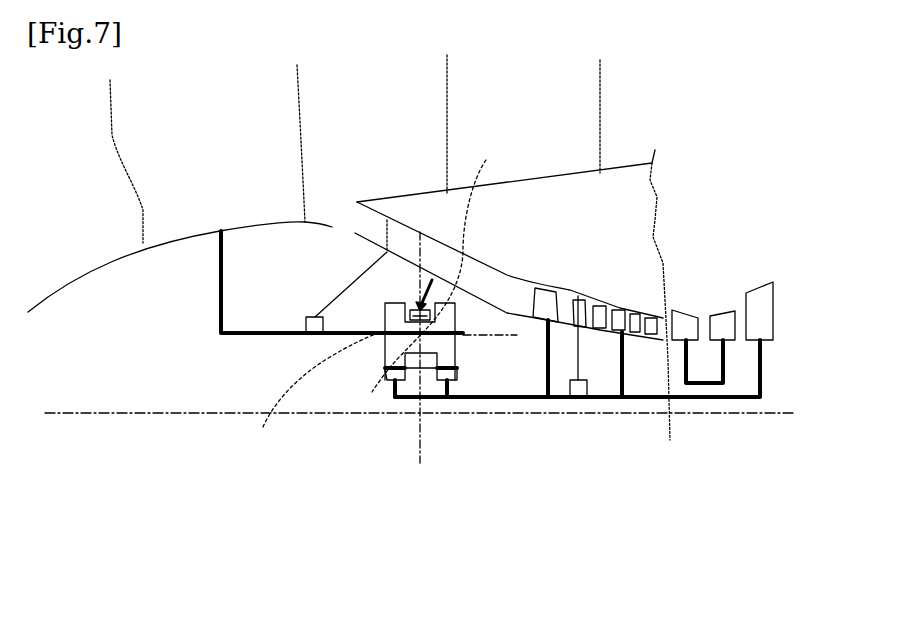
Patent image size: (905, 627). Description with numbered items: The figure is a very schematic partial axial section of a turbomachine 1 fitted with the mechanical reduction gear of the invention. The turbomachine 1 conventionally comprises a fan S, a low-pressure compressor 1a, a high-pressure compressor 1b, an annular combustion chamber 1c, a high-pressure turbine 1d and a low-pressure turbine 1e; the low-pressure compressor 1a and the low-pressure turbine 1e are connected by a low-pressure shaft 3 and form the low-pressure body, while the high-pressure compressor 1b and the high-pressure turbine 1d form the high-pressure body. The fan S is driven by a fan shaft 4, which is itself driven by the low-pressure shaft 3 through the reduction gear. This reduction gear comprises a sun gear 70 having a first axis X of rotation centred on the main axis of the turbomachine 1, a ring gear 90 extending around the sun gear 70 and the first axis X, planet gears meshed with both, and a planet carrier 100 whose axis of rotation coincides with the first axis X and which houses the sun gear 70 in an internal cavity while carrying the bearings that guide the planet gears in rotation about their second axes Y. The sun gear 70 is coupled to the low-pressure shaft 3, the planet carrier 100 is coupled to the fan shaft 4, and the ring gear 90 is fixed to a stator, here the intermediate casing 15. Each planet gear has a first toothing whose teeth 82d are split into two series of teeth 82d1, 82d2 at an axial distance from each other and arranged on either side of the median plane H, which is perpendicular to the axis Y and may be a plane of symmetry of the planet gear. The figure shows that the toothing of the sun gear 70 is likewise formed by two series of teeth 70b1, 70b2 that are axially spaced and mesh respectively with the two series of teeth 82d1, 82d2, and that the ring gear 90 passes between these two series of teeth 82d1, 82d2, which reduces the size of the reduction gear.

The turbomachine 1 is at (664, 230).
The low-pressure compressor 1a is at (600, 303).
The high-pressure compressor 1b is at (680, 320).
The annular combustion chamber 1c is at (703, 313).
The high-pressure turbine 1d is at (727, 316).
The low-pressure turbine 1e is at (760, 290).
The low-pressure shaft 3 is at (525, 399).
The fan shaft 4 is at (270, 337).
The intermediate casing 15 is at (426, 208).
The sun gear 70 is at (438, 378).
The first series of teeth of the sun gear 70b1 is at (455, 312).
The second series of teeth of the sun gear 70b2 is at (450, 383).
The series of teeth of the first toothing 82d is at (400, 296).
The first series of teeth of the first toothing 82d1 is at (300, 392).
The second series of teeth of the first toothing 82d2 is at (475, 266).
The ring gear 90 is at (410, 309).
The planet carrier 100 is at (392, 352).
The fan S is at (126, 140).
The median plane H is at (420, 448).
The first axis of rotation X is at (778, 406).
The second axis of rotation Y is at (500, 340).